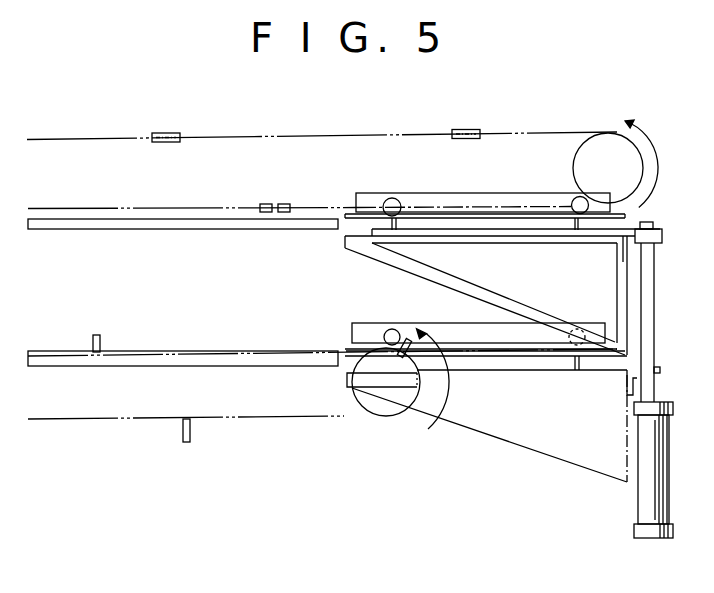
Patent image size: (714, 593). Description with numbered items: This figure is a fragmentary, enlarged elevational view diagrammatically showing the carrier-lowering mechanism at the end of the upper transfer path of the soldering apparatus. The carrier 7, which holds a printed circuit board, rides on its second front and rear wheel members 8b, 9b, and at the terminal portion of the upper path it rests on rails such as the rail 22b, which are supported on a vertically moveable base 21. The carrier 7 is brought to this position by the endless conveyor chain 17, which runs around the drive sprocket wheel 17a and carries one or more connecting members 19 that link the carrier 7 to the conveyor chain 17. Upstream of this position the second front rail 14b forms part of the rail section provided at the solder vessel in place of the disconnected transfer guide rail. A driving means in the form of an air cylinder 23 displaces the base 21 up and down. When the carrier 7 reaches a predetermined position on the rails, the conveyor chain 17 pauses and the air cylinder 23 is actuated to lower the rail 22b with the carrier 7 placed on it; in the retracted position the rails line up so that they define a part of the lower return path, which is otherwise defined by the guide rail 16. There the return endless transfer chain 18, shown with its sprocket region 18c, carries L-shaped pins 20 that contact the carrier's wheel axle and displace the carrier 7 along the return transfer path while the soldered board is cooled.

The carrier 7 is at (443, 193).
The second front wheel member 8b is at (583, 199).
The second rear wheel member 9b is at (392, 198).
The second front rail 14b is at (214, 231).
The guide rail 16 is at (130, 363).
The conveyor chain 17 is at (278, 132).
The drive sprocket wheel 17a is at (613, 133).
The return endless transfer chain 18 is at (252, 422).
The pivot shaft 18c is at (386, 414).
The connecting member 19 is at (284, 204).
The L-shaped pin 20 is at (101, 335).
The vertically moveable base 21 is at (552, 244).
The rail 22b is at (495, 236).
The air cylinder 23 is at (656, 538).